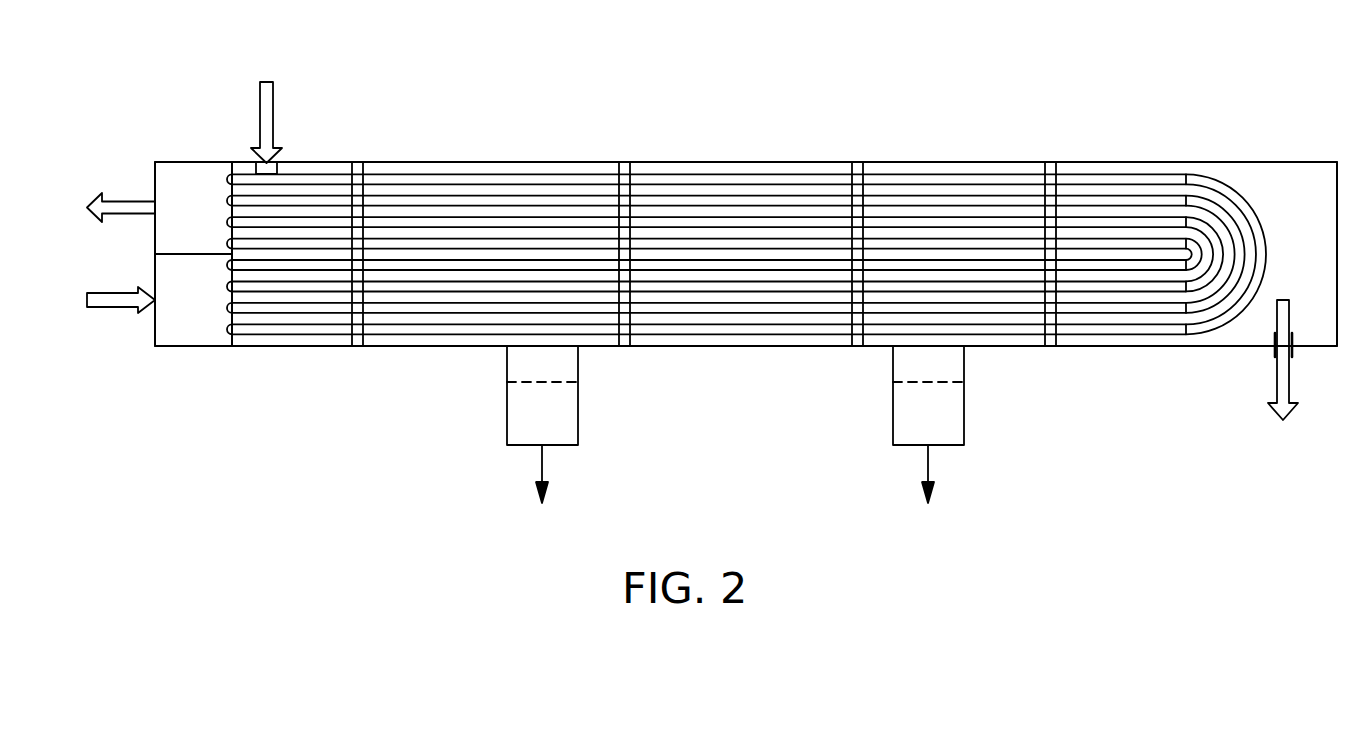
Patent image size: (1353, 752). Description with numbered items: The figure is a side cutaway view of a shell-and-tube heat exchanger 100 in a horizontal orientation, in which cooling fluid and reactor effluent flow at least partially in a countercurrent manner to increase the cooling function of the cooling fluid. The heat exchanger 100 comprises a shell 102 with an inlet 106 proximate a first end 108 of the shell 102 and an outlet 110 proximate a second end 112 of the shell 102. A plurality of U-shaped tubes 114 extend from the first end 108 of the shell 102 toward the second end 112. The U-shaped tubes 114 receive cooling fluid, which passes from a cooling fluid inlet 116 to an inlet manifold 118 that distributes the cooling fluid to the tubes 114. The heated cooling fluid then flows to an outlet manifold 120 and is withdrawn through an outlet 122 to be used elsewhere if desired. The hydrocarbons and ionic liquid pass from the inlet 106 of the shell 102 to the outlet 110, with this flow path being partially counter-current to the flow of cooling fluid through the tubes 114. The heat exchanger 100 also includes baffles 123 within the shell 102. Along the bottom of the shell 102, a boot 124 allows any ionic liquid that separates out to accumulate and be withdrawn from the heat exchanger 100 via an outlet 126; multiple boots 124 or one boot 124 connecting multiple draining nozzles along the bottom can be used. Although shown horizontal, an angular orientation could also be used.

The heat exchanger 100 is at (1171, 55).
The shell 102 is at (692, 161).
The inlet 106 is at (267, 167).
The first end 108 is at (186, 161).
The outlet 110 is at (1279, 350).
The second end 112 is at (1317, 170).
The U-shaped tubes 114 is at (447, 181).
The cooling fluid inlet 116 is at (150, 302).
The inlet manifold 118 is at (193, 338).
The outlet manifold 120 is at (173, 177).
The outlet 122 is at (155, 198).
The baffles 123 is at (355, 172).
The boot 124 is at (579, 414).
The outlet 126 is at (543, 467).